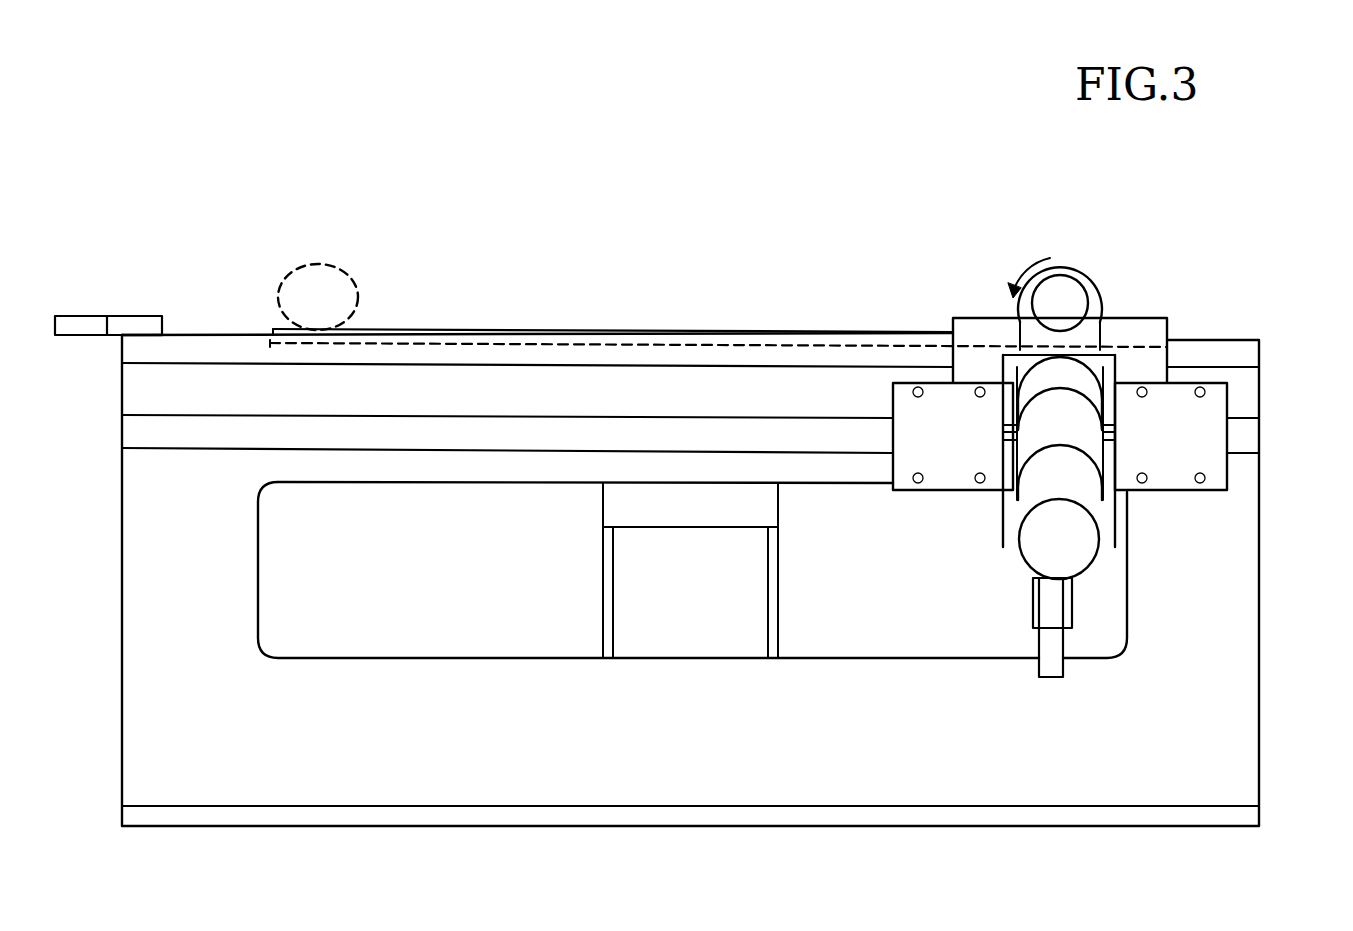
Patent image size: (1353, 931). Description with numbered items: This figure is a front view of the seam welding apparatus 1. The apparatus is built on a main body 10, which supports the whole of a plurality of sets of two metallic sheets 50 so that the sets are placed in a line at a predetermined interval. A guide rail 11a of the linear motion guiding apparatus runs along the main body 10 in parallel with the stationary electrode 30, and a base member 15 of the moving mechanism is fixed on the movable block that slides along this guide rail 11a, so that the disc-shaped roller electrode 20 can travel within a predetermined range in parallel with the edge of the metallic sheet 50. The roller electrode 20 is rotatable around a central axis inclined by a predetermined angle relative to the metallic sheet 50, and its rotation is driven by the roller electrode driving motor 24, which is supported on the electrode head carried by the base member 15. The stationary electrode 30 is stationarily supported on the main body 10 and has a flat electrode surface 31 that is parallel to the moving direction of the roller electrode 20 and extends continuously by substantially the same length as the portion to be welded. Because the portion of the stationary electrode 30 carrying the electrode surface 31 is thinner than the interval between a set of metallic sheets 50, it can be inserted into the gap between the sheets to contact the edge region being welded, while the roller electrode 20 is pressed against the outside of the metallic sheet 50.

The seam welding apparatus 1 is at (751, 233).
The main body 10 is at (1252, 522).
The guide rail 11a is at (823, 440).
The base member 15 is at (947, 403).
The roller electrode 20 is at (348, 270).
The roller electrode driving motor 24 is at (1082, 562).
The stationary electrode 30 is at (229, 345).
The electrode surface 31 is at (79, 323).
The metallic sheet 50 is at (522, 333).